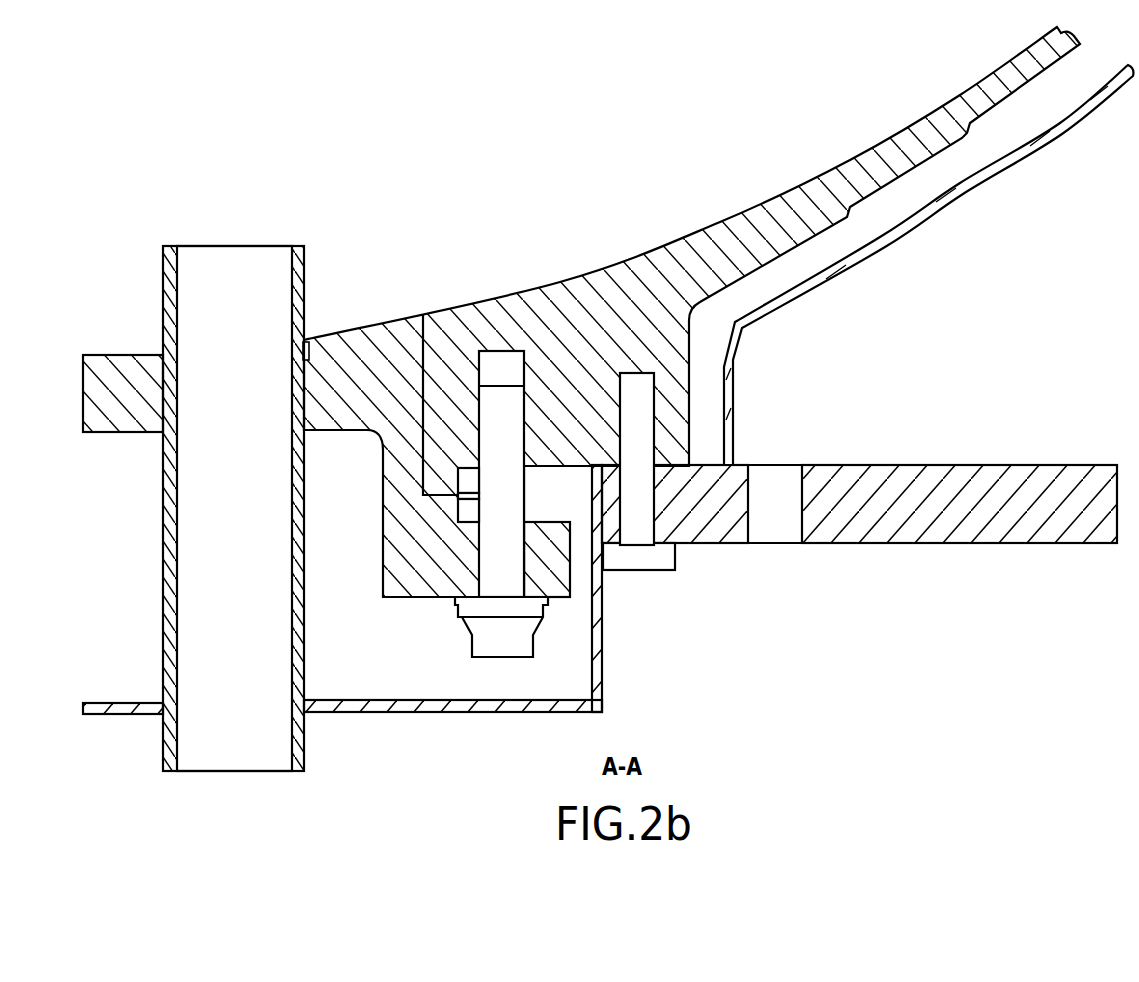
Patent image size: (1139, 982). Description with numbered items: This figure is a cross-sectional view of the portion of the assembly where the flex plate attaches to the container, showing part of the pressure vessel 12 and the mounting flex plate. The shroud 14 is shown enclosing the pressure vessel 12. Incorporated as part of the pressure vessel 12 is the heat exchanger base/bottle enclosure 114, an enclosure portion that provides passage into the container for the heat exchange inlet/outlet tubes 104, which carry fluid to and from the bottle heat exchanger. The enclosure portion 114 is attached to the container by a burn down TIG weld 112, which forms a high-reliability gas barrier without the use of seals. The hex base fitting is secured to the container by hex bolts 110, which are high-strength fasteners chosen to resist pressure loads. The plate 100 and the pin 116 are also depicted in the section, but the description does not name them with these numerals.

The pressure vessel 12 is at (655, 252).
The shroud 14 is at (837, 263).
The mounting plate 100 is at (913, 463).
The hex inlet/outlet tubes 104 is at (163, 745).
The hex bolts 110 is at (533, 635).
The burn down TIG weld 112 is at (478, 497).
The heat exchanger base/bottle enclosure 114 is at (385, 342).
The pin 116 is at (650, 443).